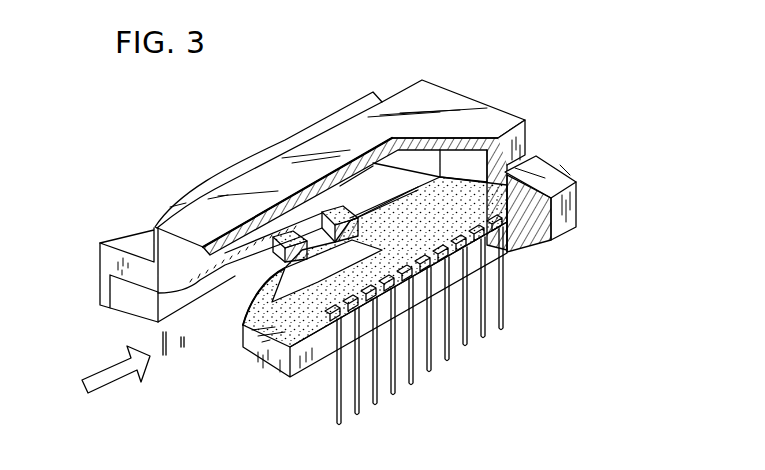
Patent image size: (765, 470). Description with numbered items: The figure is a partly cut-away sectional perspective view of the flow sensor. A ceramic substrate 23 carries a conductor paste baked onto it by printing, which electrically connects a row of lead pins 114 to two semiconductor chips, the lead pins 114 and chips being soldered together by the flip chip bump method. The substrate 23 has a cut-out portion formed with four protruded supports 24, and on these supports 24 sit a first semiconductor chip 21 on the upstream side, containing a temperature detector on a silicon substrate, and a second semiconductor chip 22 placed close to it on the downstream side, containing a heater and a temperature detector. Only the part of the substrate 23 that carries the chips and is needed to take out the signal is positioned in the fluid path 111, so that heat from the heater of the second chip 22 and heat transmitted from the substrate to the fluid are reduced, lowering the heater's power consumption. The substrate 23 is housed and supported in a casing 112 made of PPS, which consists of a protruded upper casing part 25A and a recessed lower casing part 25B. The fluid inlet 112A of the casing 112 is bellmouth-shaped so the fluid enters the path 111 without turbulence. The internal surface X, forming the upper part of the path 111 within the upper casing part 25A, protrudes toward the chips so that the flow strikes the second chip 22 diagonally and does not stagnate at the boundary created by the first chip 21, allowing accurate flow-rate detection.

The casing 112 is at (452, 100).
The fluid inlet 112A is at (175, 245).
The protruded upper casing part 25A is at (491, 148).
The recessed lower casing part 25B is at (133, 307).
The ceramic substrate 23 is at (315, 300).
The first semiconductor chip 21 is at (241, 328).
The second semiconductor chip 22 is at (348, 220).
The protruded supports 24 is at (358, 242).
The lead pins 114 is at (507, 315).
The path 111 is at (235, 336).
The internal surface X is at (298, 210).